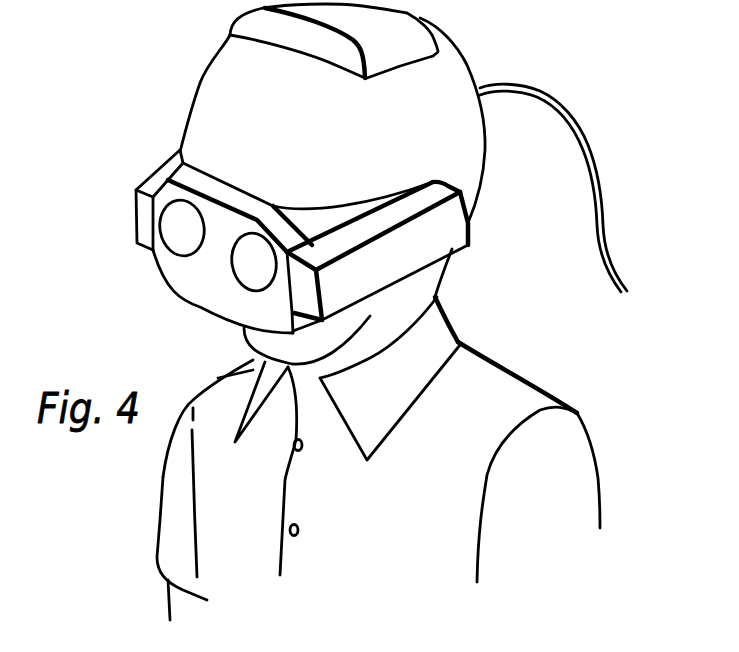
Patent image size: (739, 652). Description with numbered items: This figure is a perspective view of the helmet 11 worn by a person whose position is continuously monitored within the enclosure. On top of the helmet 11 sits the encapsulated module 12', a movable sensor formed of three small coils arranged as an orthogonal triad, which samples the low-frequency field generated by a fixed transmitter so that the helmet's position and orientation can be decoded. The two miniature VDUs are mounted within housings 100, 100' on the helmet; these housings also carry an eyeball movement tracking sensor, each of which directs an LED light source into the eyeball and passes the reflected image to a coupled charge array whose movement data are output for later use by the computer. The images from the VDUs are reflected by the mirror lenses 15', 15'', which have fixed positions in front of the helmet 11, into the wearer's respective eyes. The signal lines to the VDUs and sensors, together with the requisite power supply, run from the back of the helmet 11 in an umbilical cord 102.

The helmet 11 is at (441, 88).
The encapsulated module 12' is at (368, 39).
The umbilical cord 102 is at (600, 215).
The housing 100 is at (425, 256).
The housing 100' is at (126, 186).
The mirror lens 15' is at (230, 291).
The mirror lens 15'' is at (152, 255).